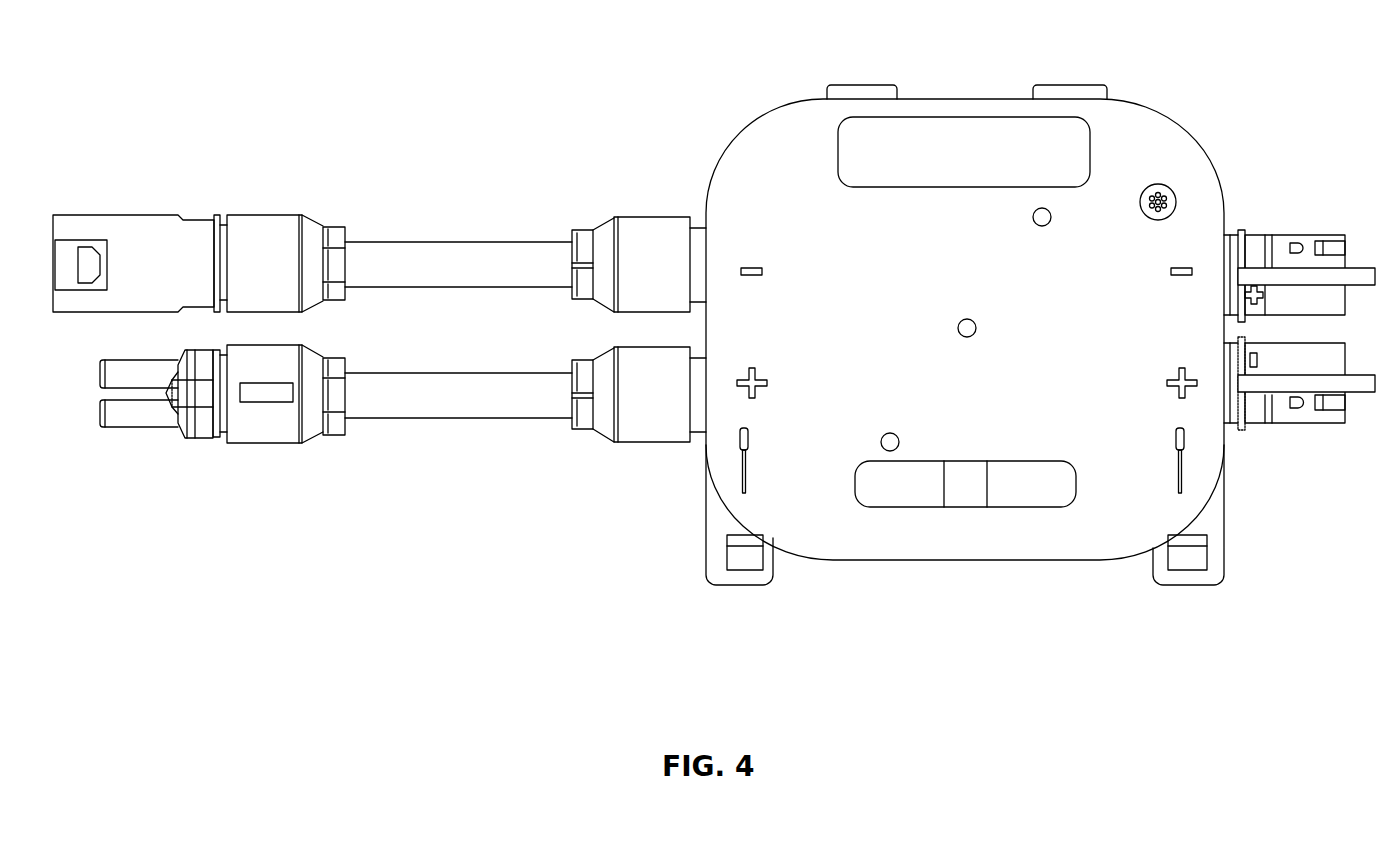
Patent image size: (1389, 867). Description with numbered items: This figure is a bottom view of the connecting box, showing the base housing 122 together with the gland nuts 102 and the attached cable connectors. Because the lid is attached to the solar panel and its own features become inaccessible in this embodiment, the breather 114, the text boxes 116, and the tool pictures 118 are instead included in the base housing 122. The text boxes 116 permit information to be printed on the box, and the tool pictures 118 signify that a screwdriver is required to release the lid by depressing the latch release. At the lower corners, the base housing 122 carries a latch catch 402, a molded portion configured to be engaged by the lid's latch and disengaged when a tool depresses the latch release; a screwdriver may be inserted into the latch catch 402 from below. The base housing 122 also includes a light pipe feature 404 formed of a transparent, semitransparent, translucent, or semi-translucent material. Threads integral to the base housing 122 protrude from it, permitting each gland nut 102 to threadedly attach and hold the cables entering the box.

The gland nut 102 is at (638, 242).
The breather 114 is at (1175, 197).
The text boxes 116 is at (968, 130).
The tool pictures 118 is at (738, 440).
The base housing 122 is at (1153, 110).
The latch catch 402 is at (725, 558).
The light pipe feature 404 is at (896, 436).